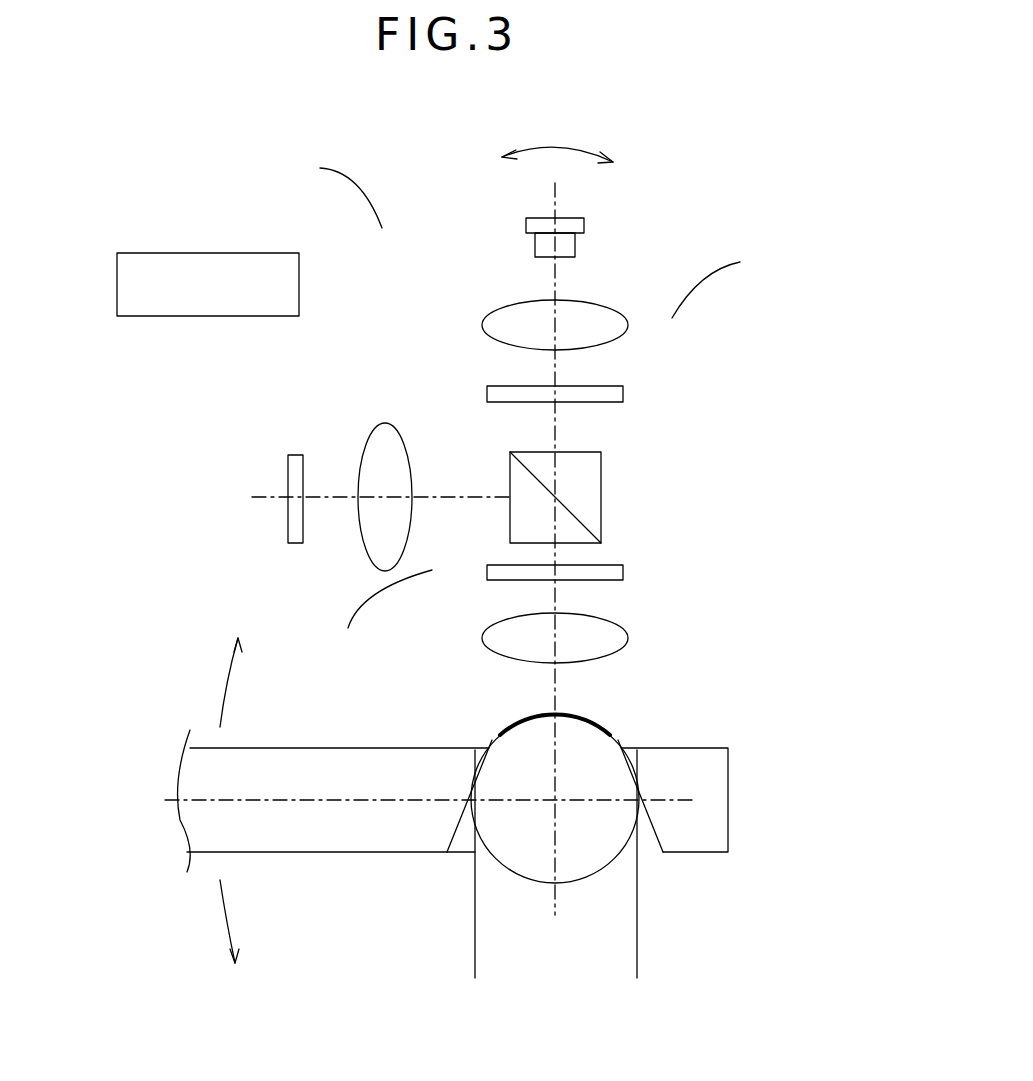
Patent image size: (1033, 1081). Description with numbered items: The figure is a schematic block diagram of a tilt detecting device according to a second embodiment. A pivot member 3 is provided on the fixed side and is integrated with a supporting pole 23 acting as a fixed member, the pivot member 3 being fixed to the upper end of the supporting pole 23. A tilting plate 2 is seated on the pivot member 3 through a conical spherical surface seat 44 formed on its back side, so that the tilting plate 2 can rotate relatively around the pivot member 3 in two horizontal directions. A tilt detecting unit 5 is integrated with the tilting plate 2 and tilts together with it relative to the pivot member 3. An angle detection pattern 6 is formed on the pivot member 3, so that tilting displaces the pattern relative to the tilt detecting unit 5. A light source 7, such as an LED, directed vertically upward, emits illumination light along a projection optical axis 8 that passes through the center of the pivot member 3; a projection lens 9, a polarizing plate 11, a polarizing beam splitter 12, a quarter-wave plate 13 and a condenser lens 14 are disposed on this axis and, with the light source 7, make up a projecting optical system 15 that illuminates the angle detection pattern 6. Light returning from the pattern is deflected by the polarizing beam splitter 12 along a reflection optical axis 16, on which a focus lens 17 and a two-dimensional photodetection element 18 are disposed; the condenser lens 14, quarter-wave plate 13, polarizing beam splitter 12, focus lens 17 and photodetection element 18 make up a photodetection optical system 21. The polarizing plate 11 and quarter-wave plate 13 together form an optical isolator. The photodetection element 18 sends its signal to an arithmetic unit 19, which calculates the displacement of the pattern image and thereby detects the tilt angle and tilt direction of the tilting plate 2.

The tilting plate 2 is at (345, 748).
The pivot member 3 is at (618, 853).
The tilt detecting unit 5 is at (382, 228).
The angle detection pattern 6 is at (588, 722).
The light source 7 is at (535, 246).
The projection optical axis 8 is at (557, 367).
The projection lens 9 is at (483, 325).
The polarizing plate 11 is at (606, 403).
The polarizing beam splitter 12 is at (601, 492).
The quarter-wave plate 13 is at (608, 581).
The condenser lens 14 is at (485, 643).
The projecting optical system 15 is at (672, 318).
The reflection optical axis 16 is at (490, 497).
The focus lens 17 is at (371, 433).
The photodetection element 18 is at (288, 475).
The arithmetic unit 19 is at (200, 253).
The photodetection optical system 21 is at (432, 570).
The supporting pole 23 is at (475, 888).
The spherical surface seat 44 is at (455, 832).